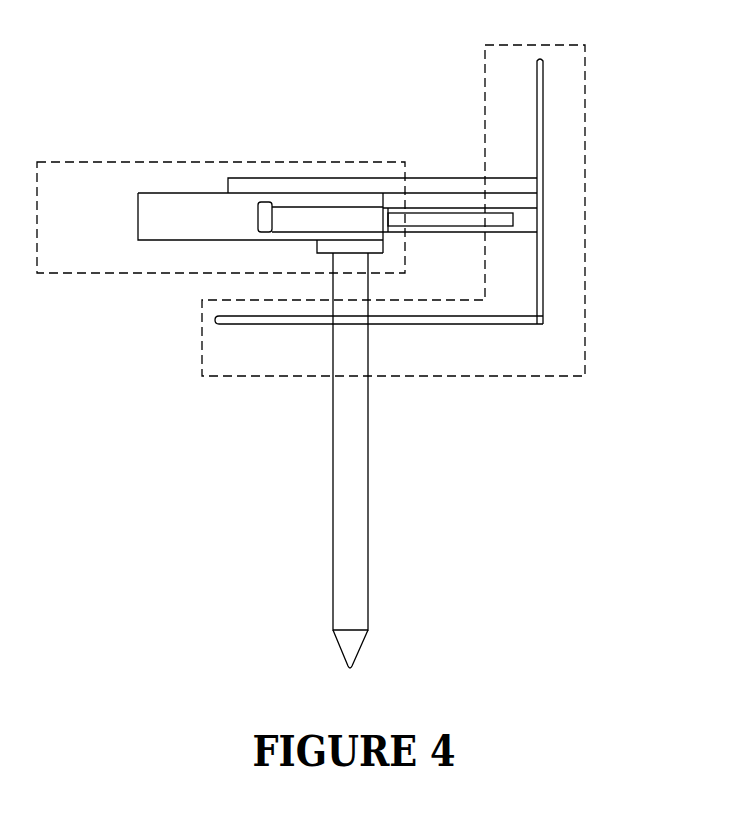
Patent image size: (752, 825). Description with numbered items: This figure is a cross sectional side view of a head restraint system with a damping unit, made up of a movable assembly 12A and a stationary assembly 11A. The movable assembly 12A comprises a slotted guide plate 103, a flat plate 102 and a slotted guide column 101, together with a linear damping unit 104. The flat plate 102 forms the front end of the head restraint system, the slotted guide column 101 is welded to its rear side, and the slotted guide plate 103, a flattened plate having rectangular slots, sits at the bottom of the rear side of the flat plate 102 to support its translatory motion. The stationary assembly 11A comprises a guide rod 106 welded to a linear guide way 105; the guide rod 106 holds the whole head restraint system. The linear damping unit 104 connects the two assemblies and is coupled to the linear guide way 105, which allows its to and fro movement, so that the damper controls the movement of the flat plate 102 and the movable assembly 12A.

The stationary assembly 11A is at (221, 217).
The movable assembly 12A is at (393, 210).
The slotted guide column 101 is at (337, 178).
The flat plate 102 is at (540, 188).
The slotted guide plate 103 is at (252, 327).
The linear damping unit 104 is at (302, 220).
The linear guide way 105 is at (140, 193).
The guide rod 106 is at (350, 580).